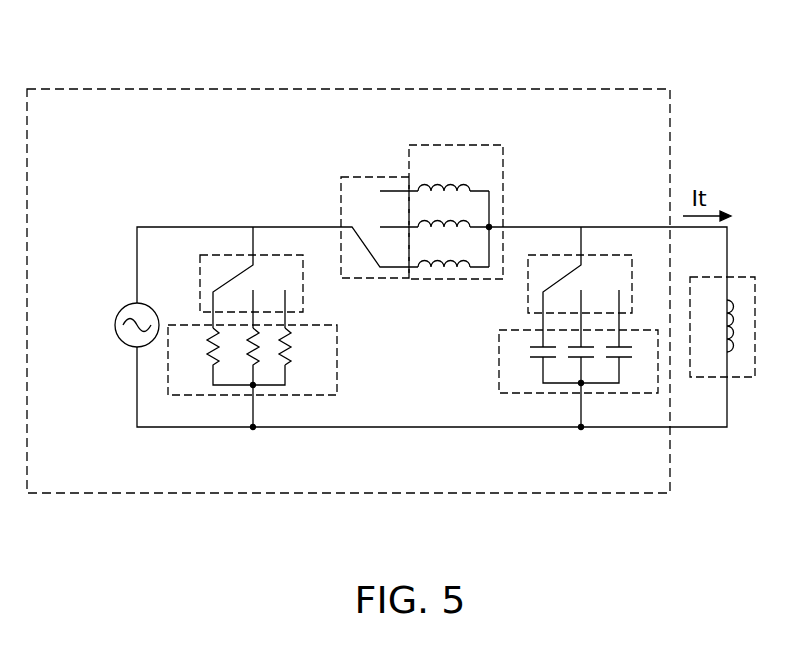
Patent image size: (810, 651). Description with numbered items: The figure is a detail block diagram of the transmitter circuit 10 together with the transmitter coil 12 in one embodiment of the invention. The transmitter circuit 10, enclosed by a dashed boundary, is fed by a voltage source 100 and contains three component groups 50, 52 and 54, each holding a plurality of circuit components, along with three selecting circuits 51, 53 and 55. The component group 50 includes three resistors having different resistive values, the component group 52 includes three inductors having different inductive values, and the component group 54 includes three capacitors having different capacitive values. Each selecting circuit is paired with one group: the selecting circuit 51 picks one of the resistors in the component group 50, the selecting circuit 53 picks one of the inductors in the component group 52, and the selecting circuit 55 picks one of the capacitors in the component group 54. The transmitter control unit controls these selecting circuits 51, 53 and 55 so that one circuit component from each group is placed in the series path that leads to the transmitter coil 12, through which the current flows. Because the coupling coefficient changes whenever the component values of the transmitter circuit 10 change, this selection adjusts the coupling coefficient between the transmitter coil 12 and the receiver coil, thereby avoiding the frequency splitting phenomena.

The transmitter circuit 10 is at (112, 48).
The voltage source 100 is at (118, 318).
The component group 50 is at (200, 397).
The selecting circuit 51 is at (200, 256).
The component group 52 is at (503, 176).
The selecting circuit 53 is at (338, 195).
The component group 54 is at (499, 366).
The selecting circuit 55 is at (528, 288).
The transmitter coil 12 is at (755, 300).